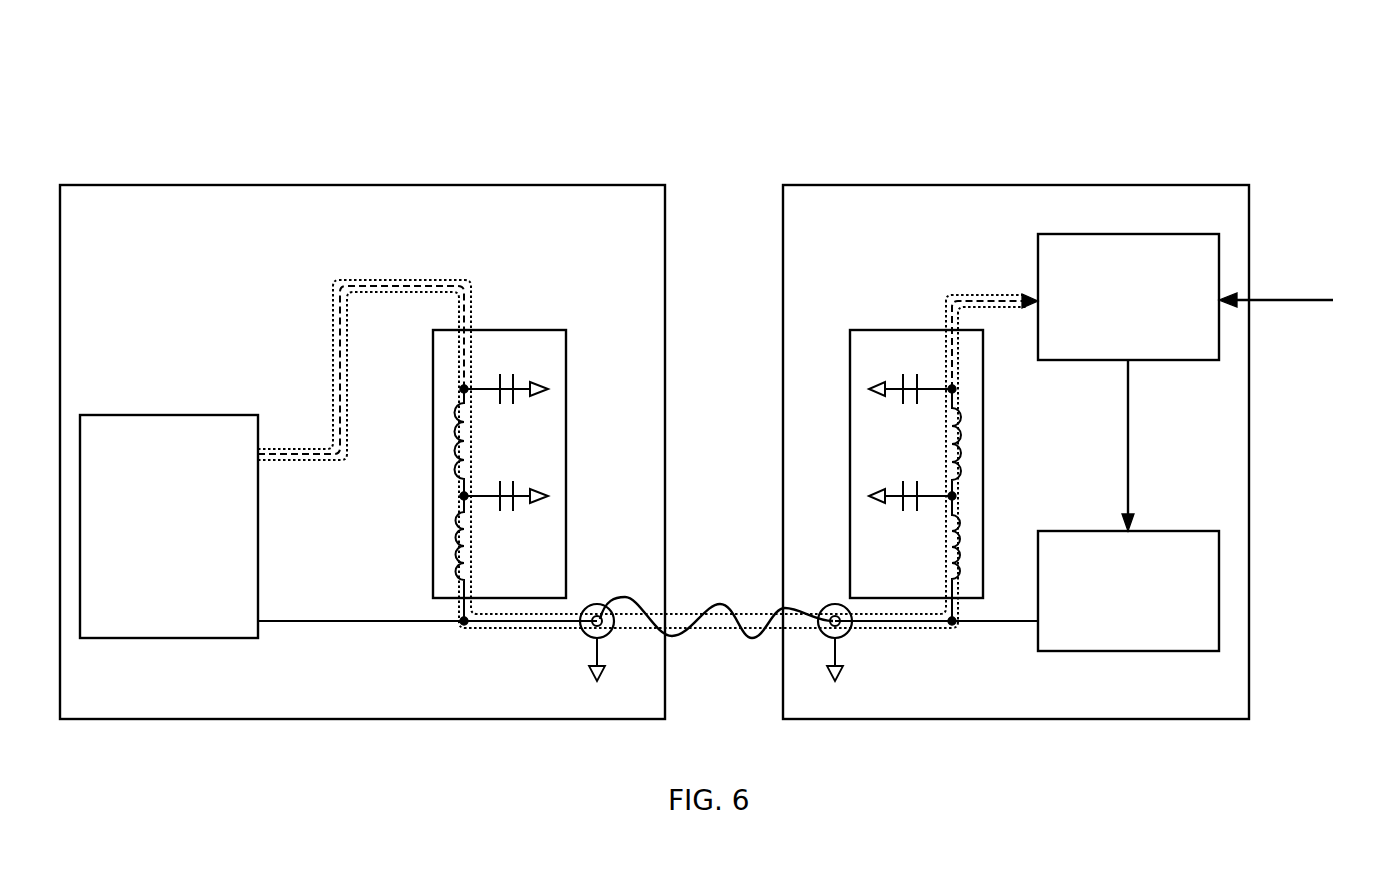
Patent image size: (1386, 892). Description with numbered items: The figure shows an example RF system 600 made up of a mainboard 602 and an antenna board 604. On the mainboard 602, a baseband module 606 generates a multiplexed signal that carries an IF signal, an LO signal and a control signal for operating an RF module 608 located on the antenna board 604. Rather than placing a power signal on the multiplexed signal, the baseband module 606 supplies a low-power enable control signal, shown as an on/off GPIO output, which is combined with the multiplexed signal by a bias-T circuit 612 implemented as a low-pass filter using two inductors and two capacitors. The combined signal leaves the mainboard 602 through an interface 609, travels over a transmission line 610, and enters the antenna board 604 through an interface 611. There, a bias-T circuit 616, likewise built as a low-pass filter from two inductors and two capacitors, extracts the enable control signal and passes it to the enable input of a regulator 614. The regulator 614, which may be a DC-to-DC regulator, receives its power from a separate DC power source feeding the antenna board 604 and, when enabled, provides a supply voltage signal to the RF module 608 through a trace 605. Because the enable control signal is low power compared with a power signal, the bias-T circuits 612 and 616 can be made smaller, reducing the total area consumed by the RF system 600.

The RF system 600 is at (710, 378).
The mainboard 602 is at (372, 185).
The antenna board 604 is at (1037, 185).
The trace 605 is at (1130, 450).
The baseband module 606 is at (163, 415).
The RF module 608 is at (1185, 531).
The interface 609 is at (598, 612).
The transmission line 610 is at (722, 604).
The interface 611 is at (823, 634).
The bias-T circuit 612 is at (530, 330).
The regulator 614 is at (1148, 234).
The bias-T circuit 616 is at (890, 330).